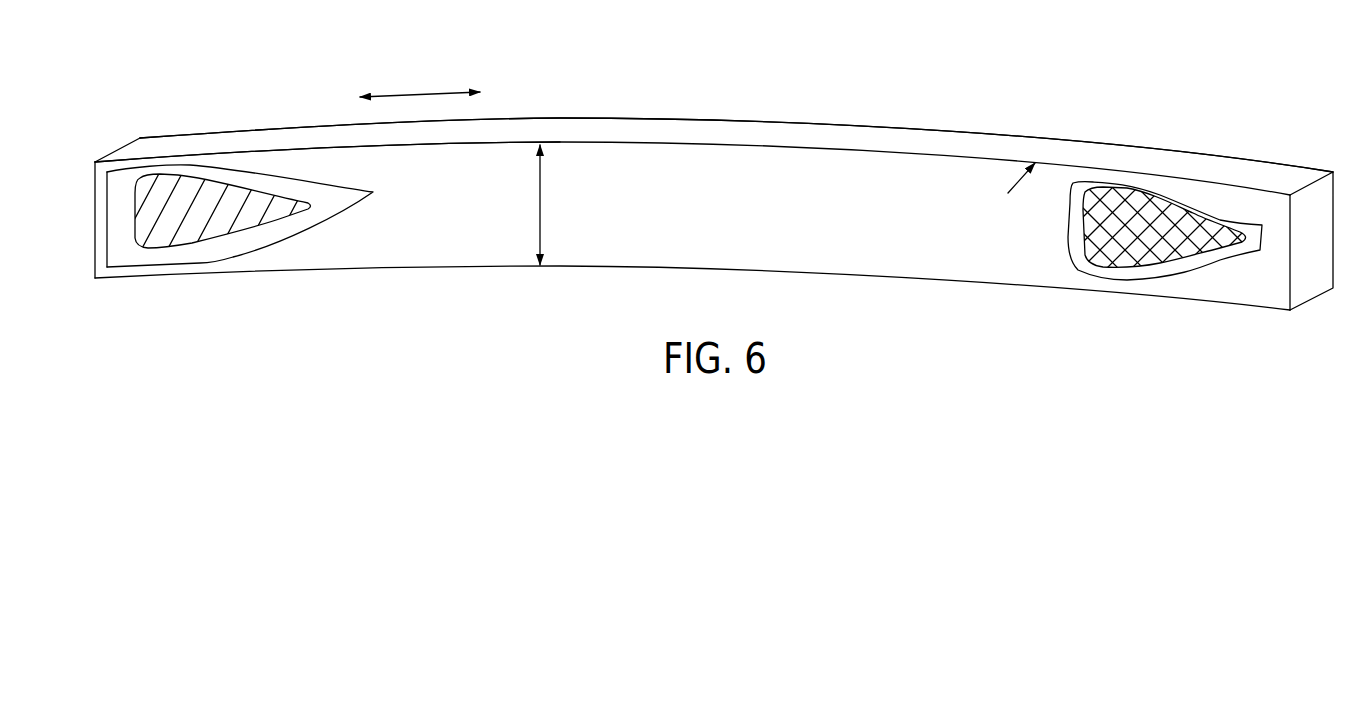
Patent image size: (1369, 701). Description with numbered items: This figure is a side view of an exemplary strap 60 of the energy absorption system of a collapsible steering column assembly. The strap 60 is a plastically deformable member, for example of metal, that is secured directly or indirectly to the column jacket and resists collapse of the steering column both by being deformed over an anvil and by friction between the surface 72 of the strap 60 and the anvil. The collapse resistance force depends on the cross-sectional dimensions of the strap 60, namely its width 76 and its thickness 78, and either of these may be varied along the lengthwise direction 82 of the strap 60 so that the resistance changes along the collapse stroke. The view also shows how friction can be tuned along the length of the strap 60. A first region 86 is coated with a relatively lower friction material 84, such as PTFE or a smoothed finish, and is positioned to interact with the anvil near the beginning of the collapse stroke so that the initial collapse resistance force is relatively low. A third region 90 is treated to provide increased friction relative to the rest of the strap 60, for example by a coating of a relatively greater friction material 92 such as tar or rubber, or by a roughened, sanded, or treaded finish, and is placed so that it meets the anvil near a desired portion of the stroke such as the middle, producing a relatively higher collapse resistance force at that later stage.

The strap 60 is at (777, 78).
The thickness 78 is at (1058, 135).
The lengthwise direction 82 is at (420, 93).
The width 76 is at (543, 203).
The surface 72 is at (358, 218).
The third region 90 is at (118, 258).
The greater friction material 92 is at (190, 232).
The region 86 is at (1078, 258).
The lower friction material 84 is at (1148, 258).